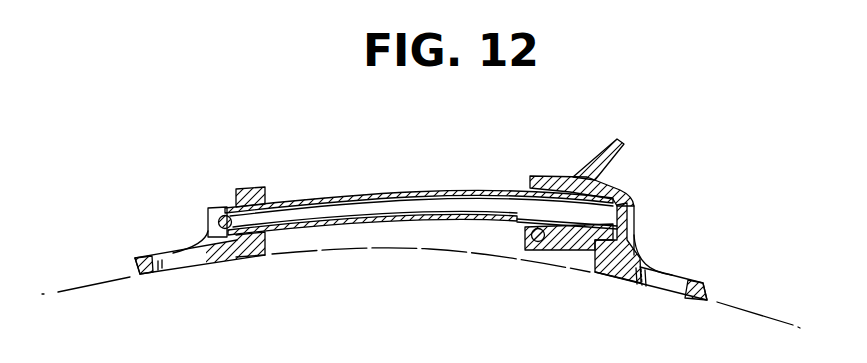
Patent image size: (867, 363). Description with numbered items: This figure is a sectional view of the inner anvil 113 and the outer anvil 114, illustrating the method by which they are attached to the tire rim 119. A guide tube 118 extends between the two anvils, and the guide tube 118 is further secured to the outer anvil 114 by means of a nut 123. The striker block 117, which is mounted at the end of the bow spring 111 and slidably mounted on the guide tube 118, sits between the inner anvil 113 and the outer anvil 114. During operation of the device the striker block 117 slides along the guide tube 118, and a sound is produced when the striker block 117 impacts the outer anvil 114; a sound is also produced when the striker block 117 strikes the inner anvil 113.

The bow spring 111 is at (613, 153).
The inner anvil 113 is at (603, 274).
The outer anvil 114 is at (262, 188).
The striker block 117 is at (558, 176).
The guide tube 118 is at (423, 189).
The tire rim 119 is at (378, 252).
The nut 123 is at (212, 207).